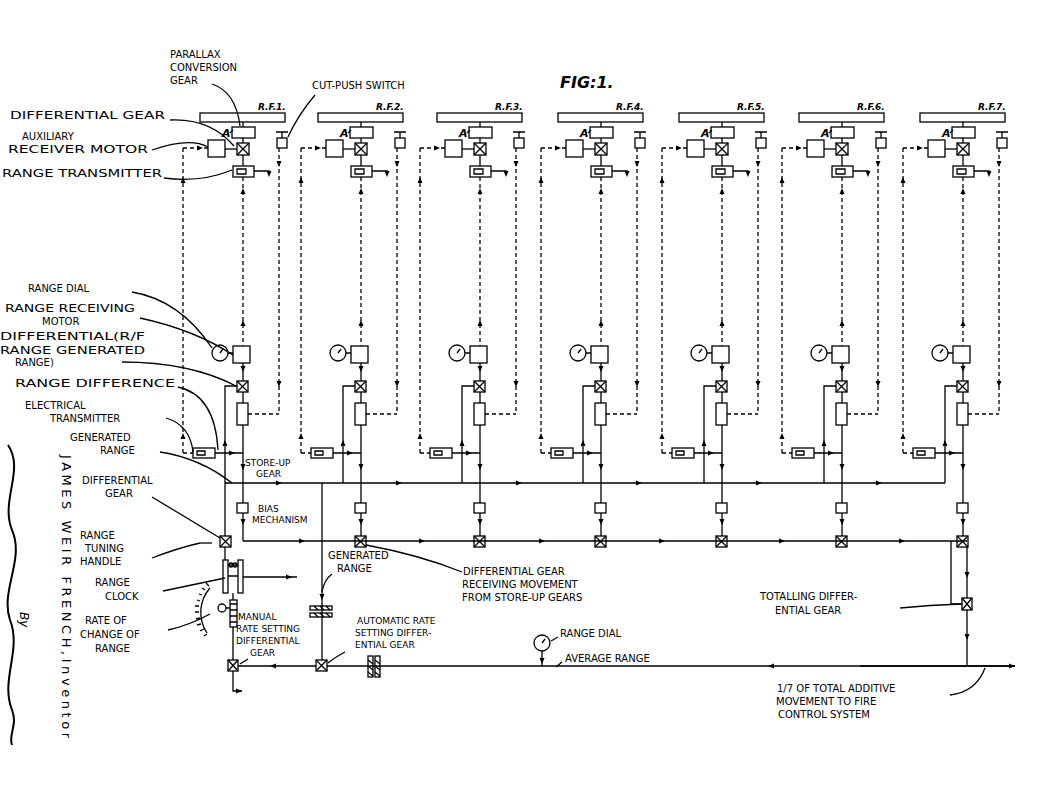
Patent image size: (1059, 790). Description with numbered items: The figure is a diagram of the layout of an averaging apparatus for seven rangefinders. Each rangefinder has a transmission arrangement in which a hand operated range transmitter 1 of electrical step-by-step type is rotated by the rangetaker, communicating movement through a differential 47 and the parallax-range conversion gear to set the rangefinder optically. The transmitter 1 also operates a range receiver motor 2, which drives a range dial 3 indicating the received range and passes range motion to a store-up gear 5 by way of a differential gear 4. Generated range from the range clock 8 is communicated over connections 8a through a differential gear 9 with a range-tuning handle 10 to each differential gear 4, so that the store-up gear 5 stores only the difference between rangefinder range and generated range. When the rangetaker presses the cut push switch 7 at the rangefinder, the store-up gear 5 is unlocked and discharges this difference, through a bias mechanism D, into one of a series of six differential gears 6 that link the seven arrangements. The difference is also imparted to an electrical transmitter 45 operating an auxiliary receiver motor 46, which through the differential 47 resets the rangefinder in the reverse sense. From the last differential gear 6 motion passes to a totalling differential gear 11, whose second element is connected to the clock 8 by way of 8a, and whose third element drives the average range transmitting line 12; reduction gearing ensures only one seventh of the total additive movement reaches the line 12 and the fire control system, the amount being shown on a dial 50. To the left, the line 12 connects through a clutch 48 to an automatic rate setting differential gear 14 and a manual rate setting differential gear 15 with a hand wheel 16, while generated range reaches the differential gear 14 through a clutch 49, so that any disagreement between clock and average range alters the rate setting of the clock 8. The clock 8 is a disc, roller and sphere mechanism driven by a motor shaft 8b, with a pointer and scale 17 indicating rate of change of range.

The range transmitter 1 is at (605, 180).
The range receiver motor 2 is at (608, 343).
The range dial 3 is at (576, 342).
The differential gear 4 is at (609, 381).
The store-up gear 5 is at (610, 423).
The differential gear 6 is at (612, 534).
The cut push switch 7 is at (648, 140).
The range clock 8 is at (222, 576).
The connections 8a is at (224, 488).
The motor shaft 8b is at (266, 575).
The differential gear 9 is at (231, 542).
The range-tuning handle 10 is at (199, 546).
The totalling differential gear 11 is at (972, 598).
The average range transmitting line 12 is at (860, 666).
The automatic rate setting differential gear 14 is at (327, 660).
The manual rate setting differential gear 15 is at (228, 666).
The hand wheel 16 is at (247, 685).
The pointer and scale 17 is at (212, 626).
The electrical transmitter 45 is at (576, 444).
The auxiliary receiver motor 46 is at (577, 159).
The differential 47 is at (614, 155).
The clutch 48 is at (379, 677).
The clutch 49 is at (332, 610).
The dial 50 is at (534, 640).
The bias mechanism D is at (609, 502).